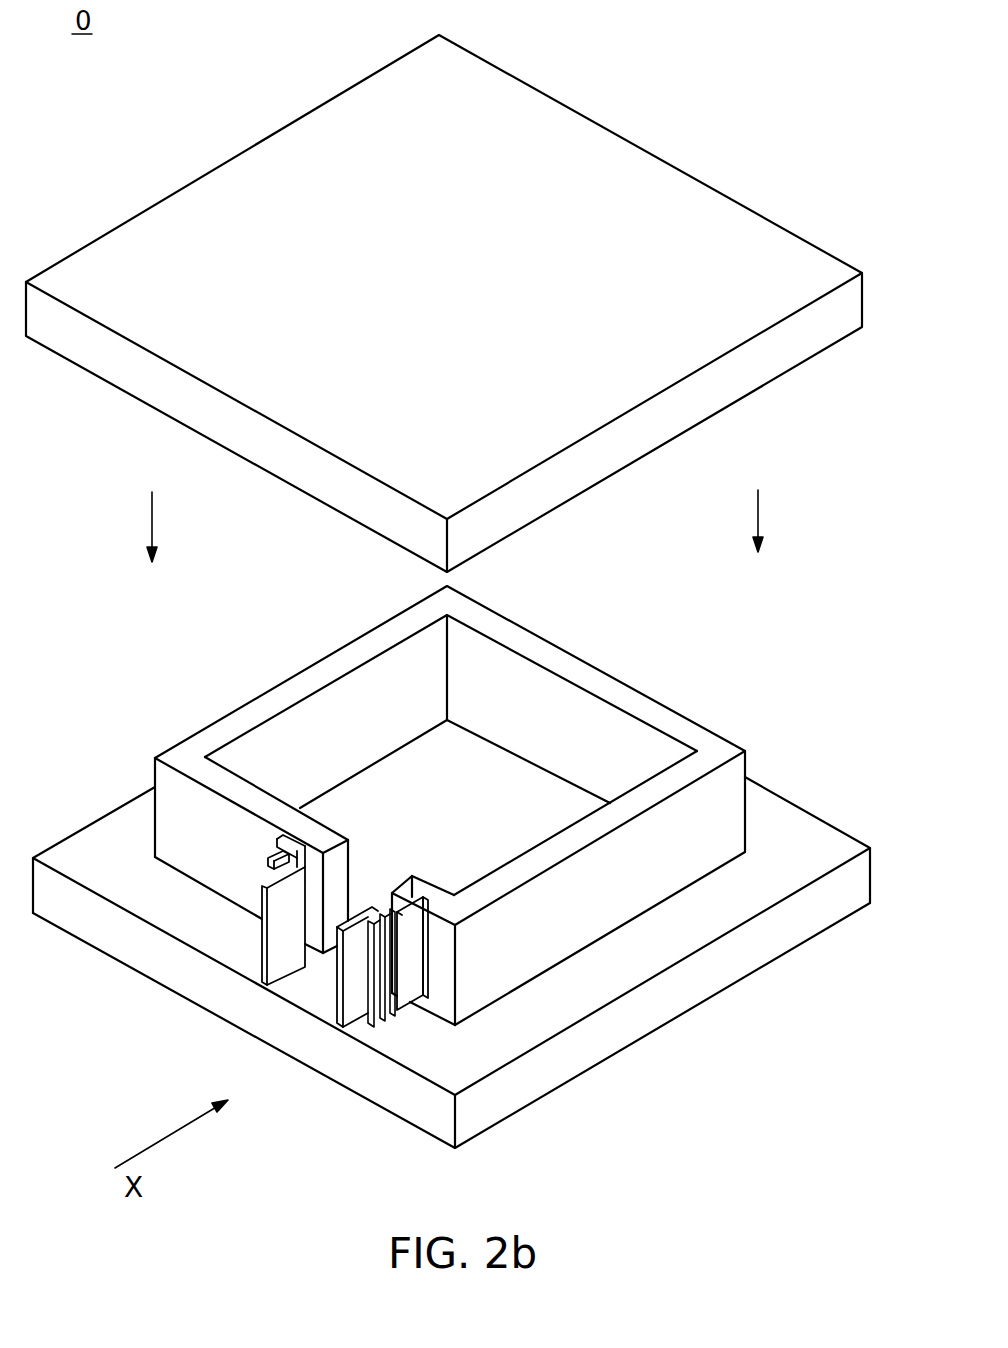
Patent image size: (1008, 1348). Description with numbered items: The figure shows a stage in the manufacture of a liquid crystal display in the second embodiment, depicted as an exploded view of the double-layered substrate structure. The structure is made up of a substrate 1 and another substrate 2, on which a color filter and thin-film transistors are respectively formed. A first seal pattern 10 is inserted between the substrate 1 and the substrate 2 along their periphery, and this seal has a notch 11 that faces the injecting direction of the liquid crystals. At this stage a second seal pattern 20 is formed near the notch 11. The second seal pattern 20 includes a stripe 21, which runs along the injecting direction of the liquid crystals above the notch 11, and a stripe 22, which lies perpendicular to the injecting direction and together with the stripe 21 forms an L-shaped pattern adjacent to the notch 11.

The substrate 1 is at (742, 960).
The substrate 2 is at (737, 382).
The first seal pattern 10 is at (572, 915).
The notch 11 is at (323, 970).
The second seal pattern 20 is at (376, 1032).
The stripe 21 is at (355, 978).
The stripe 22 is at (413, 997).